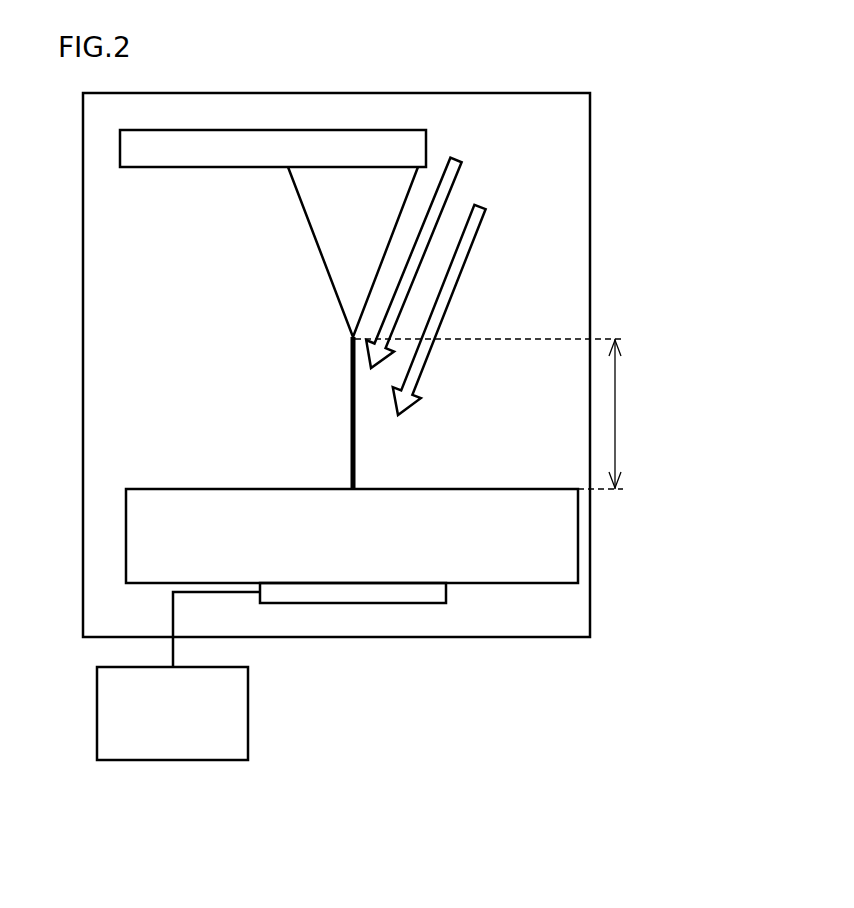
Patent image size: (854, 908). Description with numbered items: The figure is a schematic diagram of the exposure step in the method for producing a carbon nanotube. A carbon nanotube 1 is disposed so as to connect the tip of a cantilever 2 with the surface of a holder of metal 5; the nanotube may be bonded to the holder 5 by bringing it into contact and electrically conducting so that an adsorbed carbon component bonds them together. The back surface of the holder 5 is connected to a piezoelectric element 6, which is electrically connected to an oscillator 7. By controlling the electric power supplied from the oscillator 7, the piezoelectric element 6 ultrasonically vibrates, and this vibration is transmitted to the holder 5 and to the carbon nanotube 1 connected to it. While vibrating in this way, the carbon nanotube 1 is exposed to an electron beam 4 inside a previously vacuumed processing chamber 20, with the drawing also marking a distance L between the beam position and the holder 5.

The processing chamber 20 is at (590, 132).
The cantilever 2 is at (362, 140).
The carbon nanotube 1 is at (350, 430).
The electron beam 4 is at (455, 178).
The holder 5 is at (513, 503).
The piezoelectric element 6 is at (425, 592).
The oscillator 7 is at (233, 717).
The distance L is at (496, 414).